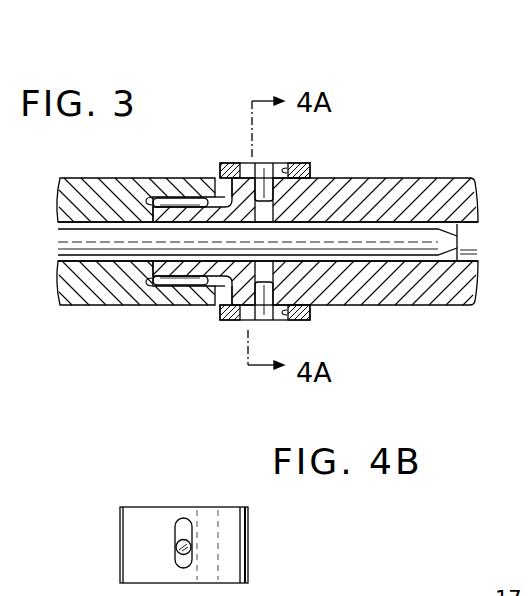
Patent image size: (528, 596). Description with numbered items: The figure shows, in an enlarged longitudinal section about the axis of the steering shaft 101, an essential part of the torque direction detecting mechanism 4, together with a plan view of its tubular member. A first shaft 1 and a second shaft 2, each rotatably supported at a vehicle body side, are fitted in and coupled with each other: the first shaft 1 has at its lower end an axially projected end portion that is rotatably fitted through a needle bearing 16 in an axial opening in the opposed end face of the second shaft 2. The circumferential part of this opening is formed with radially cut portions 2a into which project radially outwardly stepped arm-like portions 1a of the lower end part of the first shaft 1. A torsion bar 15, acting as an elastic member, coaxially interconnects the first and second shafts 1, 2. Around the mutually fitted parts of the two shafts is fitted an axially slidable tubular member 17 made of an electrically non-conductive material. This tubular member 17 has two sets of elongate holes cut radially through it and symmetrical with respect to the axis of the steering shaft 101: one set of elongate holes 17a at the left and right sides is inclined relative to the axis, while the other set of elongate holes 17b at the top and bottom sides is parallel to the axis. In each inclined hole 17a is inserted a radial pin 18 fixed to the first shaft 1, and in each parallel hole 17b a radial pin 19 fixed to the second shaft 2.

In FIG. 3, the first shaft 1 is at (428, 193).
In FIG. 3, the radially outwardly stepped arm-like portion 1a is at (243, 188).
In FIG. 3, the second shaft 2 is at (80, 190).
In FIG. 3, the radially cut portion 2a is at (222, 190).
In FIG. 3, the torque direction detecting mechanism 4 is at (316, 162).
In FIG. 3, the torsion bar 15 is at (410, 249).
In FIG. 3, the needle bearing 16 is at (176, 280).
In FIG. 3, the tubular member 17 is at (240, 182).
In FIG. 4B, the tubular member 17 is at (247, 524).
In FIG. 3, the elongate hole 17a is at (310, 173).
In FIG. 3, the elongate hole 17b is at (311, 317).
In FIG. 4B, the elongate hole 17b is at (180, 523).
In FIG. 3, the radial pin 18 is at (265, 168).
In FIG. 3, the radial pin 19 is at (264, 322).
In FIG. 4B, the radial pin 19 is at (191, 547).
In FIG. 3, the steering shaft 101 is at (380, 140).